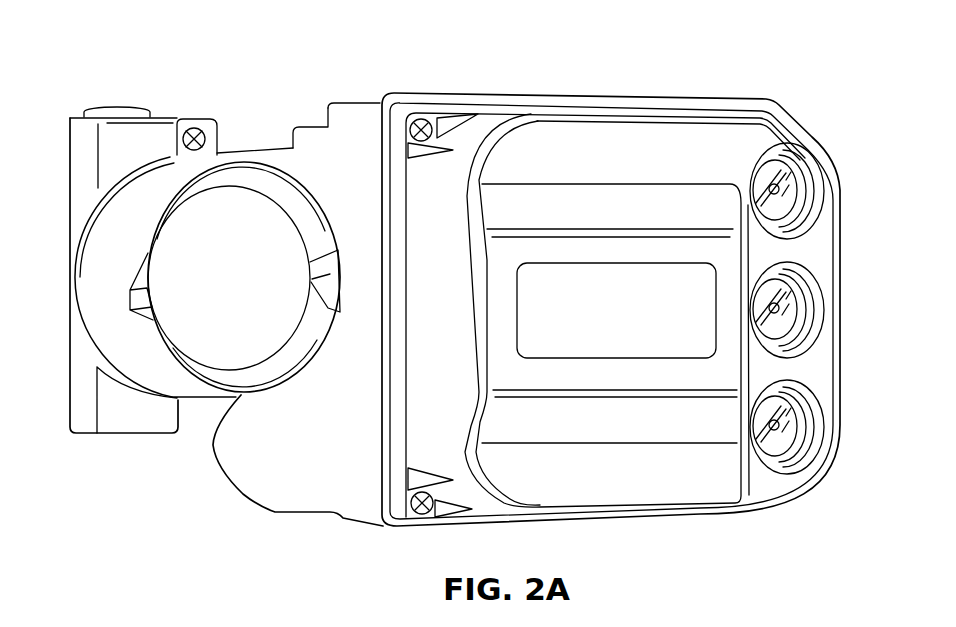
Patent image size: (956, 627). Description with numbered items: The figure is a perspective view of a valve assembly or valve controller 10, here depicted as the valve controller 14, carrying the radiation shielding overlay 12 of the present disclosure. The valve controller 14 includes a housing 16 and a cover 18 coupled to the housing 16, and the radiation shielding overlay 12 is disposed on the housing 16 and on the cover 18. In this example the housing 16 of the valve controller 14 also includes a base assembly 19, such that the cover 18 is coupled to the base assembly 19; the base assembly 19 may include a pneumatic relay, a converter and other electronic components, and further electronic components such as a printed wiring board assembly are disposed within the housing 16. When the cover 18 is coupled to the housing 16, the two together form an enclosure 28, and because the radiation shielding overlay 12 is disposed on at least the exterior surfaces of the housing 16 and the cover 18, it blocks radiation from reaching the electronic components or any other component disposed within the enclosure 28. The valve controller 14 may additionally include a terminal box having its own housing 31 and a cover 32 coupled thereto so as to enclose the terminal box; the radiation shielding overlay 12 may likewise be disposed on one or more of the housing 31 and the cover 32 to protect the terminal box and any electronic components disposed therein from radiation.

The valve controller 10 is at (860, 77).
The valve controller 14 is at (573, 306).
The radiation shielding overlay 12 is at (267, 147).
The housing 16 is at (309, 116).
The base assembly 19 is at (368, 109).
The cover 18 is at (845, 363).
The housing 31 is at (78, 136).
The cover 32 is at (208, 397).
The enclosure 28 is at (259, 524).